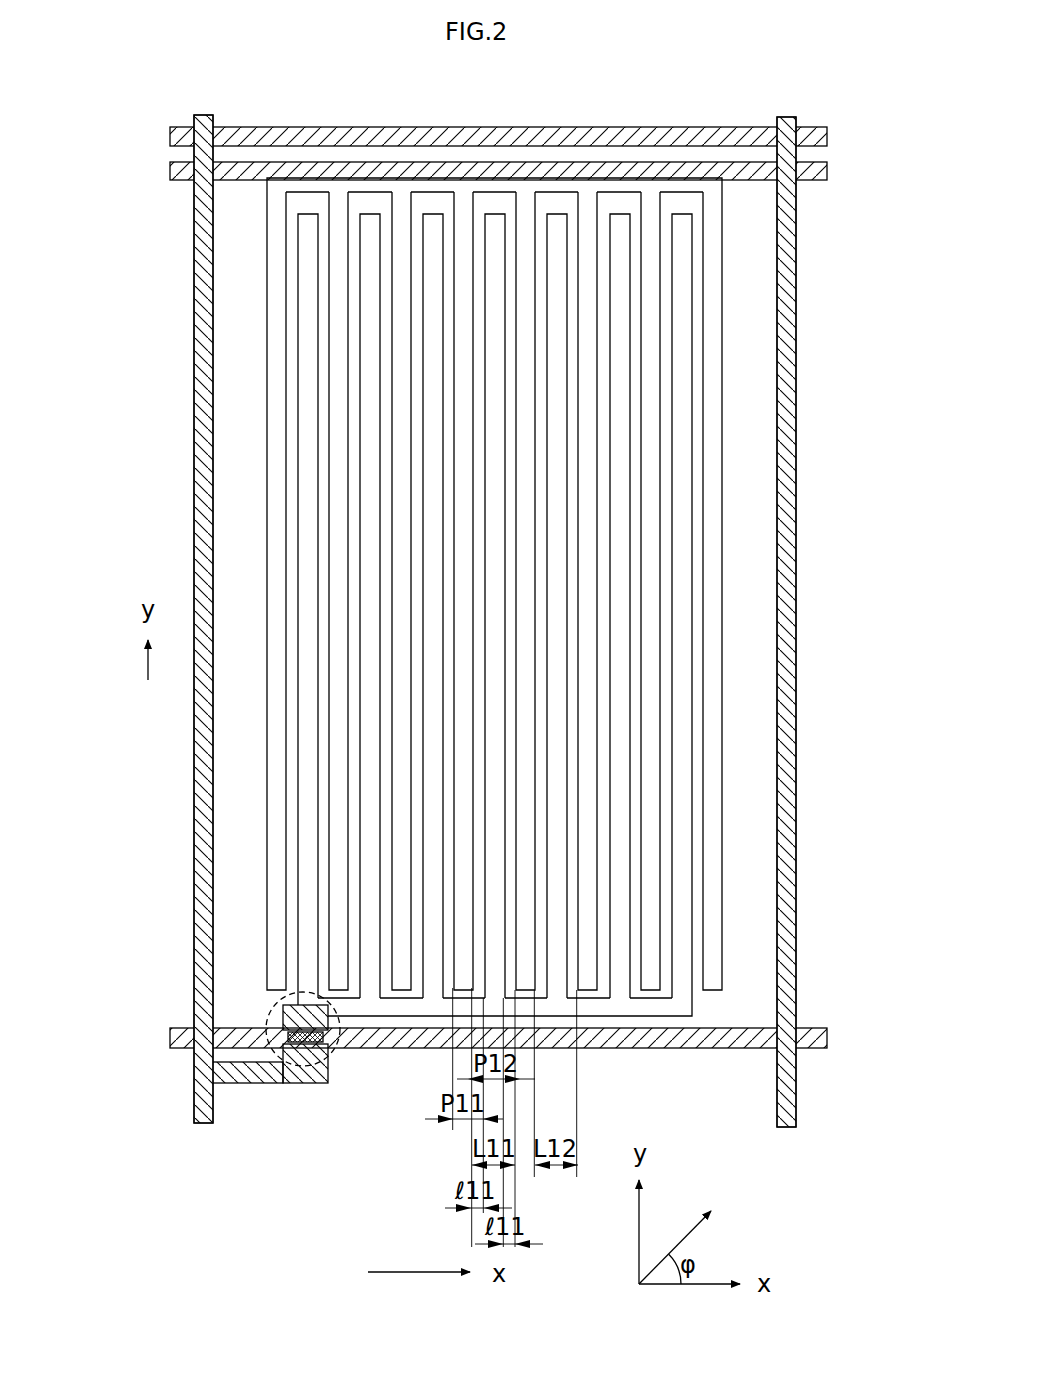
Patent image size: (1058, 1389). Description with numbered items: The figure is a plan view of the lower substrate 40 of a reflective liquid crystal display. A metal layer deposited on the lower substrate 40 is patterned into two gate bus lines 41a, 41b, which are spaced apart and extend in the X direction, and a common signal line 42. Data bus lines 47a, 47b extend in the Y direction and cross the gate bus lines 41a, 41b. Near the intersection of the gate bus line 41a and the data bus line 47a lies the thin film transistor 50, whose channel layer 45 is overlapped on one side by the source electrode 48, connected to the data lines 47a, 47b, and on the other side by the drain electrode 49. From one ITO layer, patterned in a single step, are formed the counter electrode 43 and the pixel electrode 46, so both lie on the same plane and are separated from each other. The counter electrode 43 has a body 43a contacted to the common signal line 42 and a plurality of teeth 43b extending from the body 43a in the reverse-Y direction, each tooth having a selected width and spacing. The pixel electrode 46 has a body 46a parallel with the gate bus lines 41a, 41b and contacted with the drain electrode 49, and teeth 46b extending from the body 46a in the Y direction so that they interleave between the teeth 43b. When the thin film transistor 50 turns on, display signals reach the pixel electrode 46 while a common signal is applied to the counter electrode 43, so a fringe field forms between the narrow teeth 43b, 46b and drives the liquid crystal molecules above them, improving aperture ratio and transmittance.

The lower substrate 40 is at (702, 1111).
The gate bus line 41a is at (827, 1039).
The gate bus line 41b is at (827, 139).
The common signal line 42 is at (827, 173).
The counter electrode 43 is at (610, 584).
The body 43a is at (703, 182).
The teeth 43b is at (277, 667).
The channel layer 45 is at (316, 1040).
The pixel electrode 46 is at (372, 648).
The body 46a is at (397, 995).
The teeth 46b is at (105, 912).
The data bus line 47a is at (200, 1125).
The data bus line 47b is at (784, 1128).
The source electrode 48 is at (307, 1082).
The drain electrode 49 is at (320, 1022).
The thin film transistor 50 is at (290, 1067).